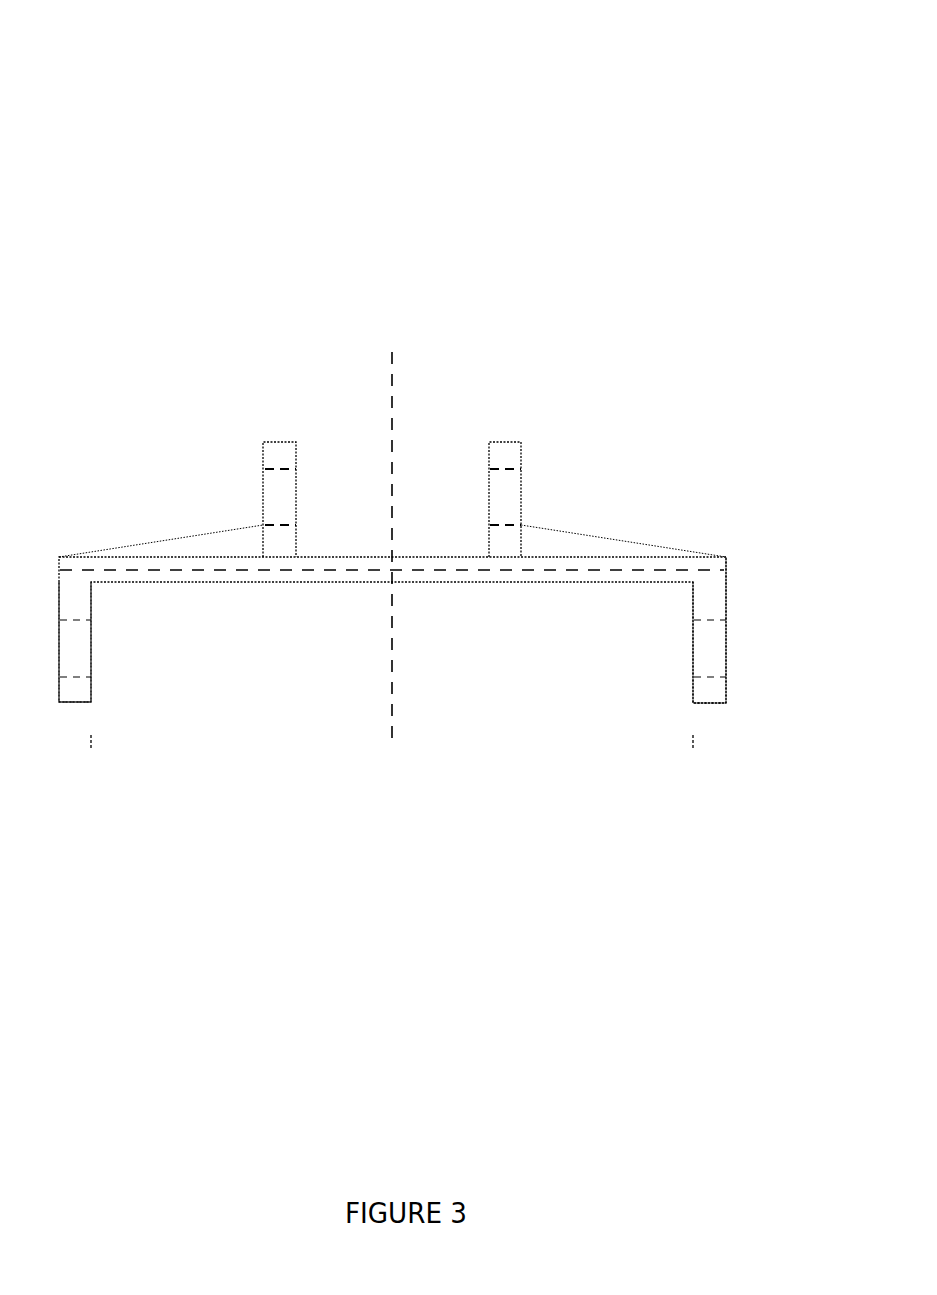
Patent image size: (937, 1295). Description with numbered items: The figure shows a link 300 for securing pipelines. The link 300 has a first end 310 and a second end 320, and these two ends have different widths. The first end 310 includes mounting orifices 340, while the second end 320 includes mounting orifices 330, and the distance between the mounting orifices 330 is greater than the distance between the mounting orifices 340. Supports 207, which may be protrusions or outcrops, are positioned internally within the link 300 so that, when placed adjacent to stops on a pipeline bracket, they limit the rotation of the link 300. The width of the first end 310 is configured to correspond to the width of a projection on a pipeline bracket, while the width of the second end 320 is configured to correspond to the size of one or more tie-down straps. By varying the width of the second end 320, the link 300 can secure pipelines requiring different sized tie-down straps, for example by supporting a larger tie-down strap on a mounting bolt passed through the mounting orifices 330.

The link 300 is at (138, 115).
The supports 207 is at (543, 537).
The first end 310 is at (508, 452).
The mounting orifices 340 is at (268, 487).
The mounting orifices 330 is at (713, 657).
The second end 320 is at (715, 690).